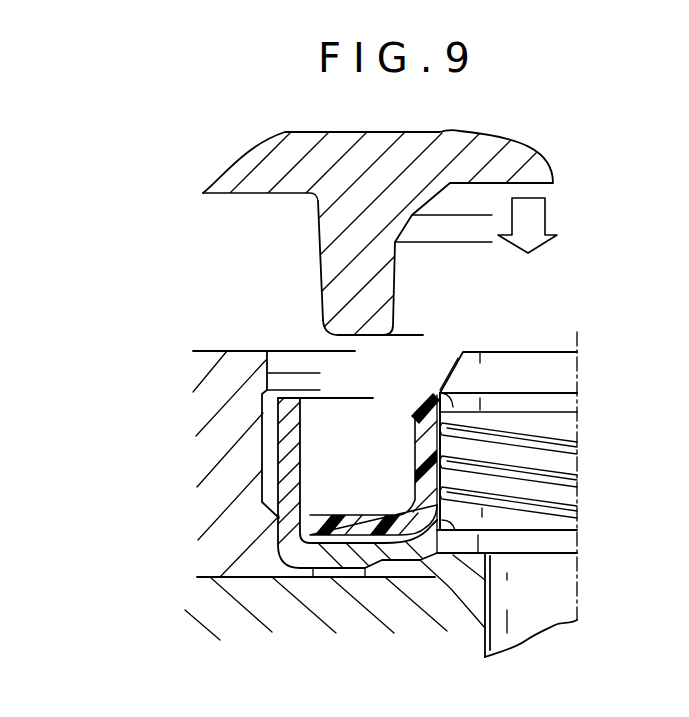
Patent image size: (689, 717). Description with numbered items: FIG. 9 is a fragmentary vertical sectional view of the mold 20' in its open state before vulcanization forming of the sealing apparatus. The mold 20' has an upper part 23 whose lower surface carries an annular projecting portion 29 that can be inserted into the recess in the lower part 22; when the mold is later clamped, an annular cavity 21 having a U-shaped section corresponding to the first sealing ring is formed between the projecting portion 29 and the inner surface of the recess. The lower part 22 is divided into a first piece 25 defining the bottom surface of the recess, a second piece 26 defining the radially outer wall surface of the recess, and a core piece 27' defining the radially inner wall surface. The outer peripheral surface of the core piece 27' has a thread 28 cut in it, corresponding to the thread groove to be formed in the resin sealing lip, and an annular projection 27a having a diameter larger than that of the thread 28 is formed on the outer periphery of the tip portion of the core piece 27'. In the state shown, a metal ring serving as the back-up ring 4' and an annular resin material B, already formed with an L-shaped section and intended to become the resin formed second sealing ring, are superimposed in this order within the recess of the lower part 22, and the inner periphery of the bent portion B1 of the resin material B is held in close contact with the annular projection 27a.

The mold 20' is at (96, 222).
The upper part 23 is at (398, 176).
The annular projecting portion 29 is at (304, 233).
The second piece 26 is at (213, 492).
The back-up ring 4' is at (350, 471).
The annular cavity 21 is at (348, 500).
The resin material B is at (405, 455).
The bent portion B1 is at (423, 402).
The annular projection 27a is at (447, 372).
The thread 28 is at (545, 521).
The core piece 27' is at (520, 605).
The lower part 22 is at (176, 617).
The first piece 25 is at (360, 593).